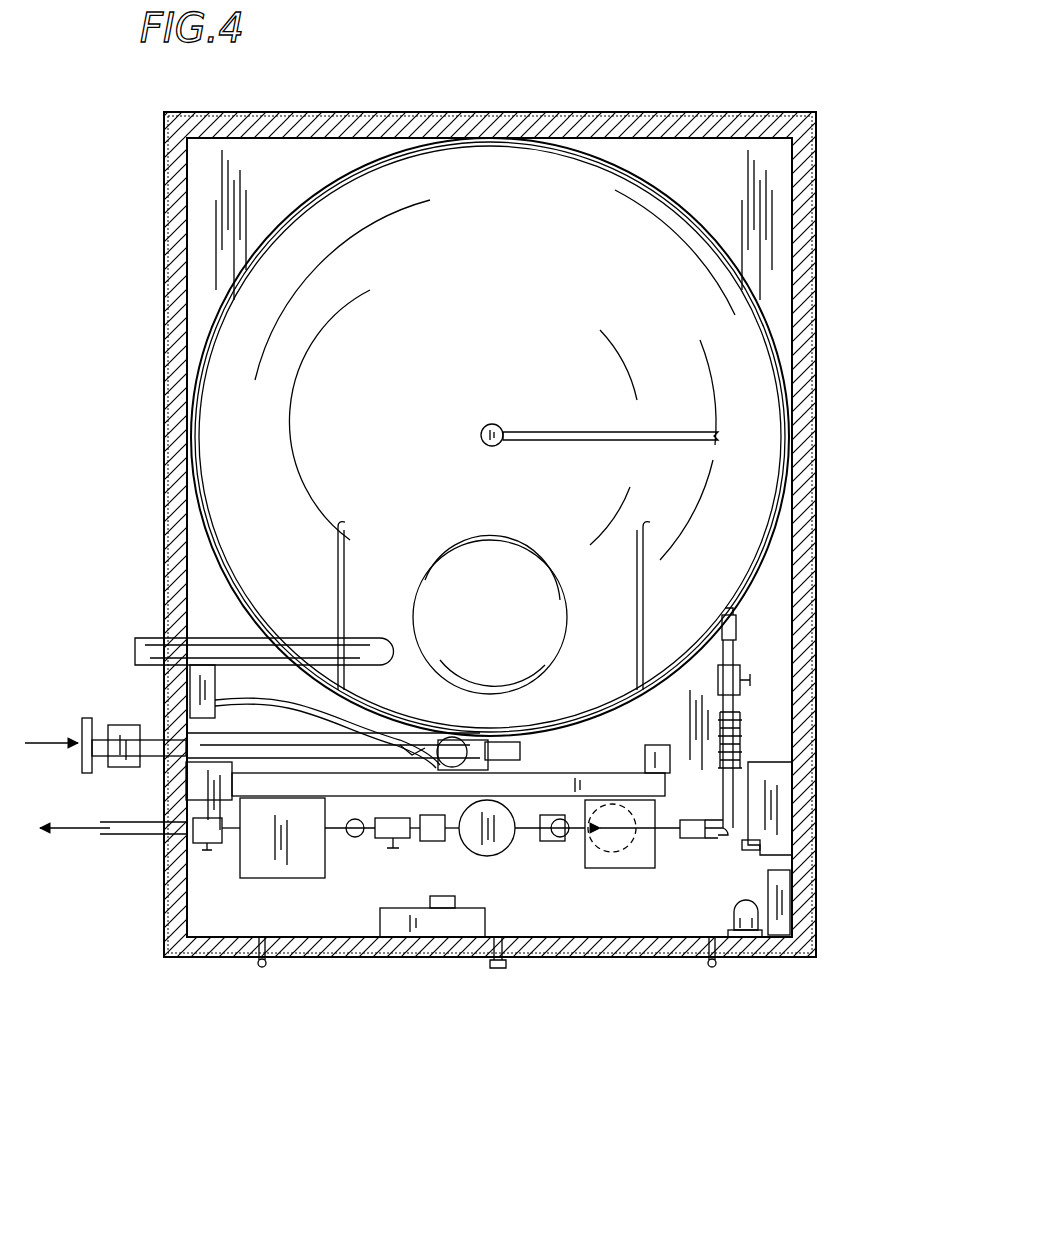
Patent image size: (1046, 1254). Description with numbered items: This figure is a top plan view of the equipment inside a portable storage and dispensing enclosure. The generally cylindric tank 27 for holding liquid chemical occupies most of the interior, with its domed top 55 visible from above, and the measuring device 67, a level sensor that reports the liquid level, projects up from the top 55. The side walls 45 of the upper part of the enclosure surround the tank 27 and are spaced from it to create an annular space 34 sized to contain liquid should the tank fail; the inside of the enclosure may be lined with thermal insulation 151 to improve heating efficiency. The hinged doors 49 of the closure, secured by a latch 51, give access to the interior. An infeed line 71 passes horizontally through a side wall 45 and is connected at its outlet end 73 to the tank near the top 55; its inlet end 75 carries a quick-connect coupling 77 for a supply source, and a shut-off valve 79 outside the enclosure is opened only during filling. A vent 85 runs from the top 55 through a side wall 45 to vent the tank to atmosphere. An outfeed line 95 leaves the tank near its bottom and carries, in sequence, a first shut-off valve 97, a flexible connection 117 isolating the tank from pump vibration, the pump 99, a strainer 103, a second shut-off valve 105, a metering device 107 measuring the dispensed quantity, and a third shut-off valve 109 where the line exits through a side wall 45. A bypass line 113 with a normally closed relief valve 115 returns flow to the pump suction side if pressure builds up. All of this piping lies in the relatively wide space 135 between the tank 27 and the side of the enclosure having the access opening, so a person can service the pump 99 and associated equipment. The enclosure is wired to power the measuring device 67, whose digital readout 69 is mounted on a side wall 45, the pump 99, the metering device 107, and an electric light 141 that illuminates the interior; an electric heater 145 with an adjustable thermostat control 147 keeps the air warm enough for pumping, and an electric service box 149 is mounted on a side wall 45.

The tank 27 is at (665, 183).
The annular space 34 is at (775, 170).
The side walls 45 is at (555, 113).
The doors 49 is at (370, 958).
The latch 51 is at (500, 968).
The domed top 55 is at (720, 325).
The measuring device 67 is at (500, 428).
The digital readout 69 is at (790, 895).
The infeed line 71 is at (245, 745).
The outlet end 73 is at (492, 764).
The inlet end 75 is at (85, 735).
The quick-connect coupling 77 is at (88, 760).
The shut-off valve 79 is at (130, 725).
The vent 85 is at (245, 640).
The outfeed line 95 is at (736, 700).
The first shut-off valve 97 is at (745, 630).
The pump 99 is at (600, 868).
The strainer 103 is at (490, 858).
The second shut-off valve 105 is at (432, 841).
The metering device 107 is at (285, 870).
The third shut-off valve 109 is at (205, 845).
The bypass line 113 is at (390, 842).
The relief valve 115 is at (355, 838).
The flexible connection 117 is at (745, 745).
The space 135 is at (578, 882).
The electric light 141 is at (745, 937).
The electric heater 145 is at (440, 920).
The thermostat control 147 is at (400, 920).
The electric service box 149 is at (780, 785).
The thermal insulation 151 is at (355, 113).